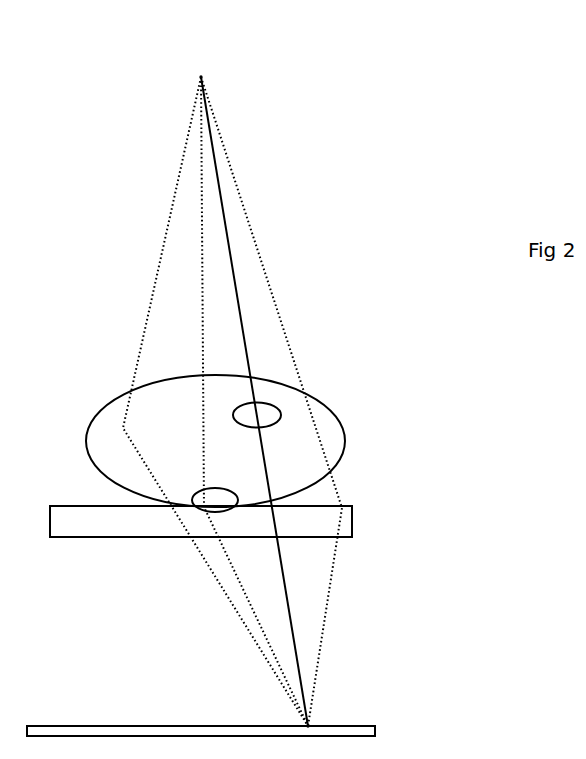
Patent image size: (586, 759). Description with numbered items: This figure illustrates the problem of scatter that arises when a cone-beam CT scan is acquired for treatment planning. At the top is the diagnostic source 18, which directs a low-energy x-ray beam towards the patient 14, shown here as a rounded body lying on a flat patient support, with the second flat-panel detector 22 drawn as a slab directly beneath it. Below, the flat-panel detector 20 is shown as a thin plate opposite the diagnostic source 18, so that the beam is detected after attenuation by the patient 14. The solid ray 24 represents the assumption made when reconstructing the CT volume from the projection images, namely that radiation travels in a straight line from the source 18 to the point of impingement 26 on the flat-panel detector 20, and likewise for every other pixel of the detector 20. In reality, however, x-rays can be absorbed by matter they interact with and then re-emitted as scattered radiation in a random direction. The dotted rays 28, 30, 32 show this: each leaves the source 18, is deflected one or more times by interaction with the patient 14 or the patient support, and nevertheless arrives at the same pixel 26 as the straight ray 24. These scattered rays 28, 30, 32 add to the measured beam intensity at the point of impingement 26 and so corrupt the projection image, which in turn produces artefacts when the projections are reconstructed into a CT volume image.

The patient 14 is at (327, 407).
The diagnostic source 18 is at (201, 77).
The flat-panel detector 20 is at (360, 724).
The second flat-panel detector 22 is at (352, 520).
The ray 24 is at (232, 258).
The point of impingement 26 is at (308, 726).
The scattered ray 28 is at (295, 358).
The scattered ray 30 is at (203, 265).
The scattered ray 32 is at (147, 318).